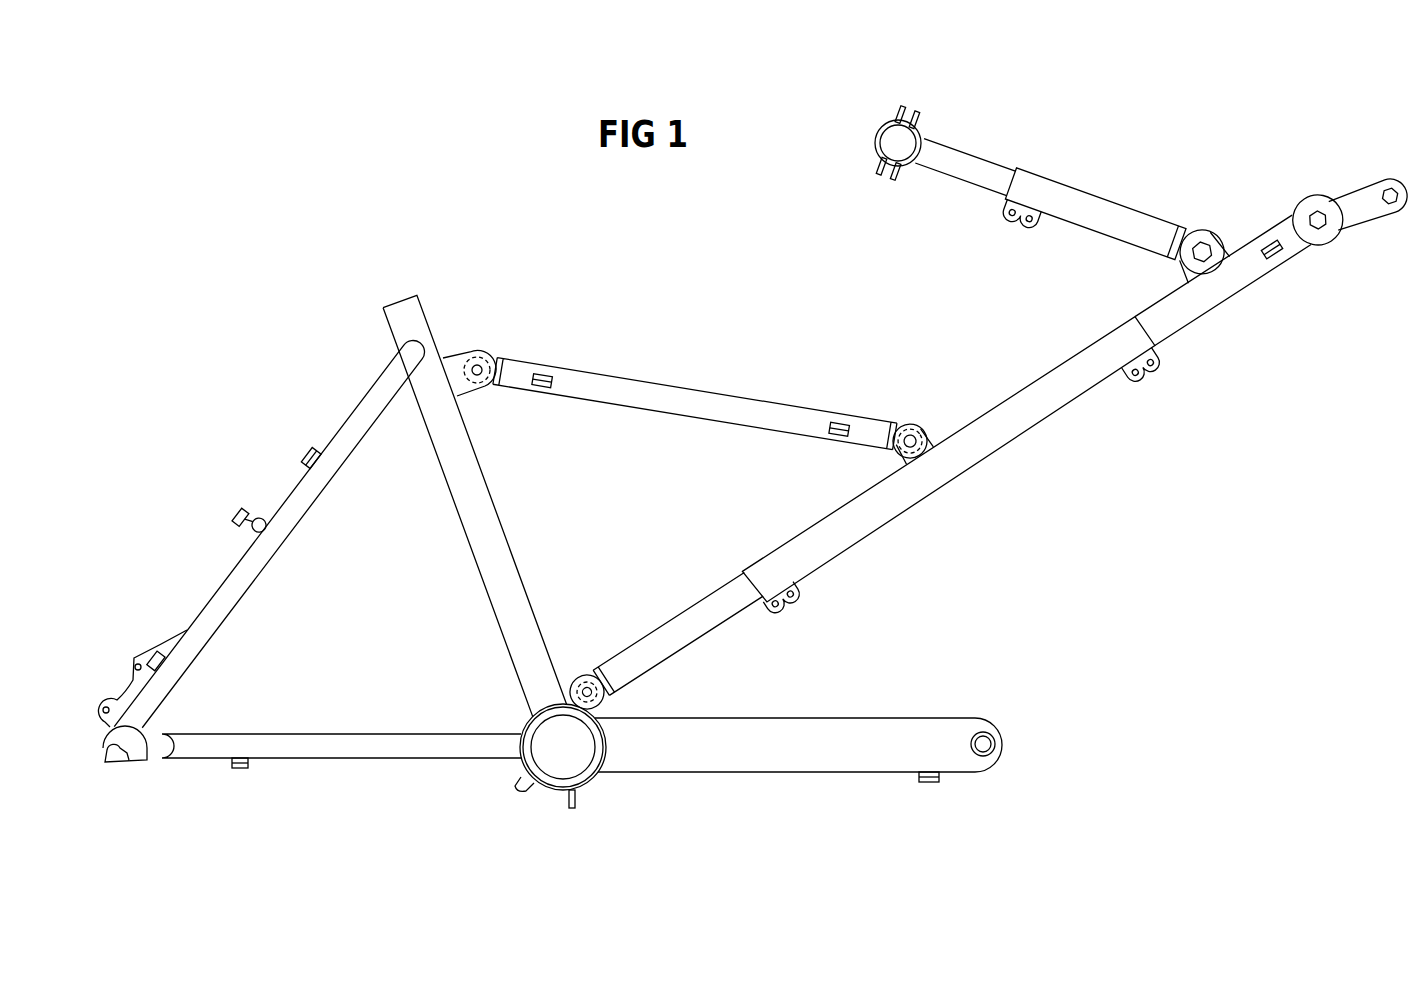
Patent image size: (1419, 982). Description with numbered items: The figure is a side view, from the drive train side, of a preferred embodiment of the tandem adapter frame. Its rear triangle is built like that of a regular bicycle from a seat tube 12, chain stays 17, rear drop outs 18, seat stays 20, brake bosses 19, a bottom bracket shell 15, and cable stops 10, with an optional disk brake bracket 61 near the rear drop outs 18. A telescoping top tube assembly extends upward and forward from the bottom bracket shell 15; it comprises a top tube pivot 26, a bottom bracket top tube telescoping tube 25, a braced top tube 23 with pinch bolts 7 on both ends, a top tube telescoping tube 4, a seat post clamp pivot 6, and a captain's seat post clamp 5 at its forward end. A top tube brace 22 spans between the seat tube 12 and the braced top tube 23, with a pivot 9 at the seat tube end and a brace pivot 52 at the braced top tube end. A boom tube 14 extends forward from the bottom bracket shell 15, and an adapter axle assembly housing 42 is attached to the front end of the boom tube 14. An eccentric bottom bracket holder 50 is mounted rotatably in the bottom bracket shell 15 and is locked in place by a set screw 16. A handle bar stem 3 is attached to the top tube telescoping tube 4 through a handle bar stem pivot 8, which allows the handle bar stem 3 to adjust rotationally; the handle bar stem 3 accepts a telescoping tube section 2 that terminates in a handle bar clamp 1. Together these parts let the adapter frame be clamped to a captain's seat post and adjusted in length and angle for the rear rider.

The handle bar clamp 1 is at (881, 127).
The telescoping tube section 2 is at (964, 150).
The handle bar stem 3 is at (1116, 200).
The top tube telescoping tube 4 is at (1213, 302).
The captain's seat post clamp 5 is at (1355, 192).
The seat post clamp pivot 6 is at (1310, 214).
The pinch bolts 7 is at (1010, 229).
The handle bar stem pivot 8 is at (1208, 232).
The pivot 9 is at (478, 350).
The cable stops 10 is at (545, 370).
The seat tube 12 is at (493, 517).
The boom tube 14 is at (755, 772).
The bottom bracket shell 15 is at (590, 785).
The set screw 16 is at (519, 791).
The chain stays 17 is at (352, 733).
The rear drop outs 18 is at (112, 766).
The brake bosses 19 is at (230, 524).
The seat stays 20 is at (300, 525).
The top tube brace 22 is at (689, 385).
The braced top tube 23 is at (916, 492).
The bottom bracket top tube telescoping tube 25 is at (684, 618).
The top tube pivot 26 is at (586, 680).
The axle assembly housing 42 is at (980, 733).
The eccentric bottom bracket holder 50 is at (560, 785).
The brace pivot 52 is at (913, 428).
The optional disk brake bracket 61 is at (134, 664).